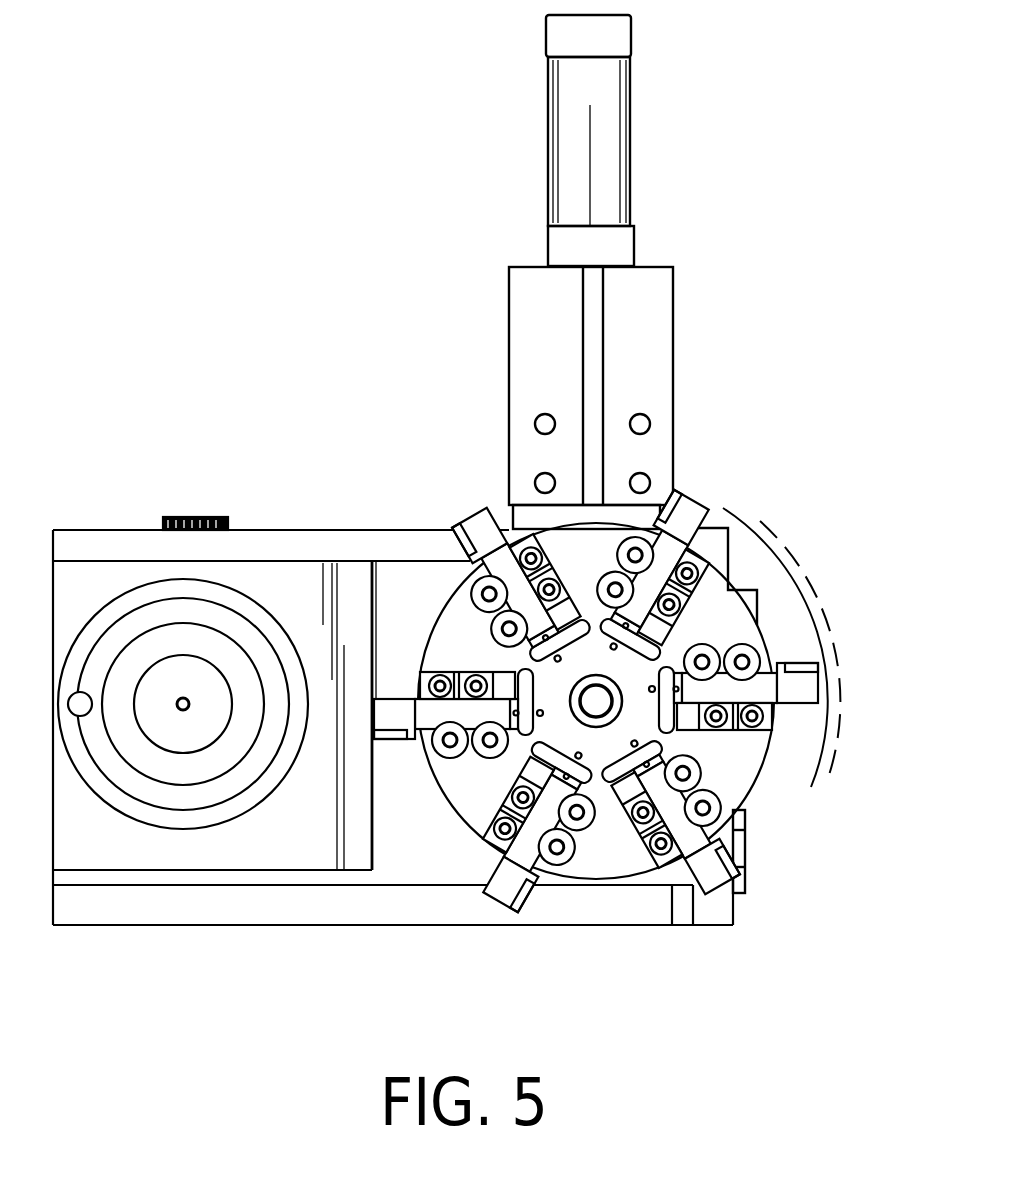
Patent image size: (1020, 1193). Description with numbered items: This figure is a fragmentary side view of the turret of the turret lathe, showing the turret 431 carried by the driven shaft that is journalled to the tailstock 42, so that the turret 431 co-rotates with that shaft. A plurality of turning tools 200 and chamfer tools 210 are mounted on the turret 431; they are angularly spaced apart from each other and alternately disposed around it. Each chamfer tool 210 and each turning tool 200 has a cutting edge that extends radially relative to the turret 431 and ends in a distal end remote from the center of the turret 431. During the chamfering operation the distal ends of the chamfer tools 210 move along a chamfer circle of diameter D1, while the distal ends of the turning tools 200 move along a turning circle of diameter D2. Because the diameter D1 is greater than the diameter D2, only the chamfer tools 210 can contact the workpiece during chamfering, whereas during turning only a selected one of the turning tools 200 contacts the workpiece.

The tailstock 42 is at (398, 575).
The chamfer tools 210 is at (690, 512).
The turning tools 200 is at (792, 690).
The turret 431 is at (735, 775).
The diameter of the chamfer circle D1 is at (768, 540).
The diameter of the turning circle D2 is at (808, 603).